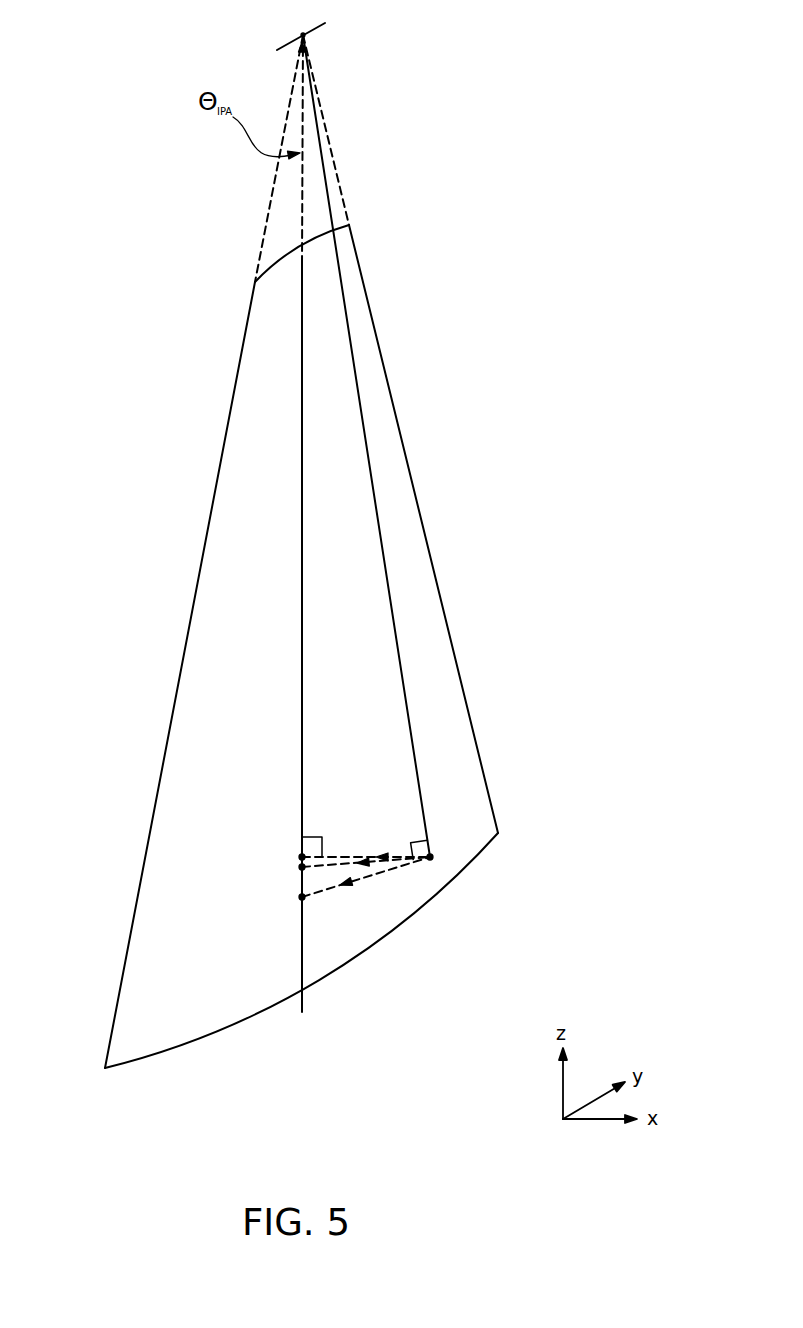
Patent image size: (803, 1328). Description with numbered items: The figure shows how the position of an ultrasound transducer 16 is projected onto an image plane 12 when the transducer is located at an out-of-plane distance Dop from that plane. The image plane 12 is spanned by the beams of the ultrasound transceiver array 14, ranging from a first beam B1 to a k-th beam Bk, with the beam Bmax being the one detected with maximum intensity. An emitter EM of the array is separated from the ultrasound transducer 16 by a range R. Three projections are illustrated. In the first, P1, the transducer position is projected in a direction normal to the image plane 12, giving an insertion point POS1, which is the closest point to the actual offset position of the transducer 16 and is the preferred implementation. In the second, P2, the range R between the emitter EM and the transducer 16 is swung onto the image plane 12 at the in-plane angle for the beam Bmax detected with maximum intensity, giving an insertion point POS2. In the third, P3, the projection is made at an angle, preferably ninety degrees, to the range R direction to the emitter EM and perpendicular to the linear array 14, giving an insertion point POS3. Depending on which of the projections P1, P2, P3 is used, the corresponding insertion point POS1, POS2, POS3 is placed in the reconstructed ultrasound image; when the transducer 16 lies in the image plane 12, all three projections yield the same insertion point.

The image plane 12 is at (415, 487).
The ultrasound transceiver array 14 is at (318, 28).
The ultrasound transducer 16 is at (430, 858).
The emitter EM is at (303, 36).
The range R is at (358, 393).
The out-of-plane distance Dop is at (340, 855).
The projection normal to the image plane P1 is at (386, 856).
The projection of the range at the in-plane angle P2 is at (369, 863).
The projection perpendicular to the range direction P3 is at (351, 882).
The insertion point POS1 is at (298, 857).
The insertion point POS2 is at (298, 867).
The insertion point POS3 is at (298, 897).
The beam Bk is at (519, 849).
The beam detected with maximum intensity Bmax is at (302, 1037).
The beam B1 is at (93, 1094).